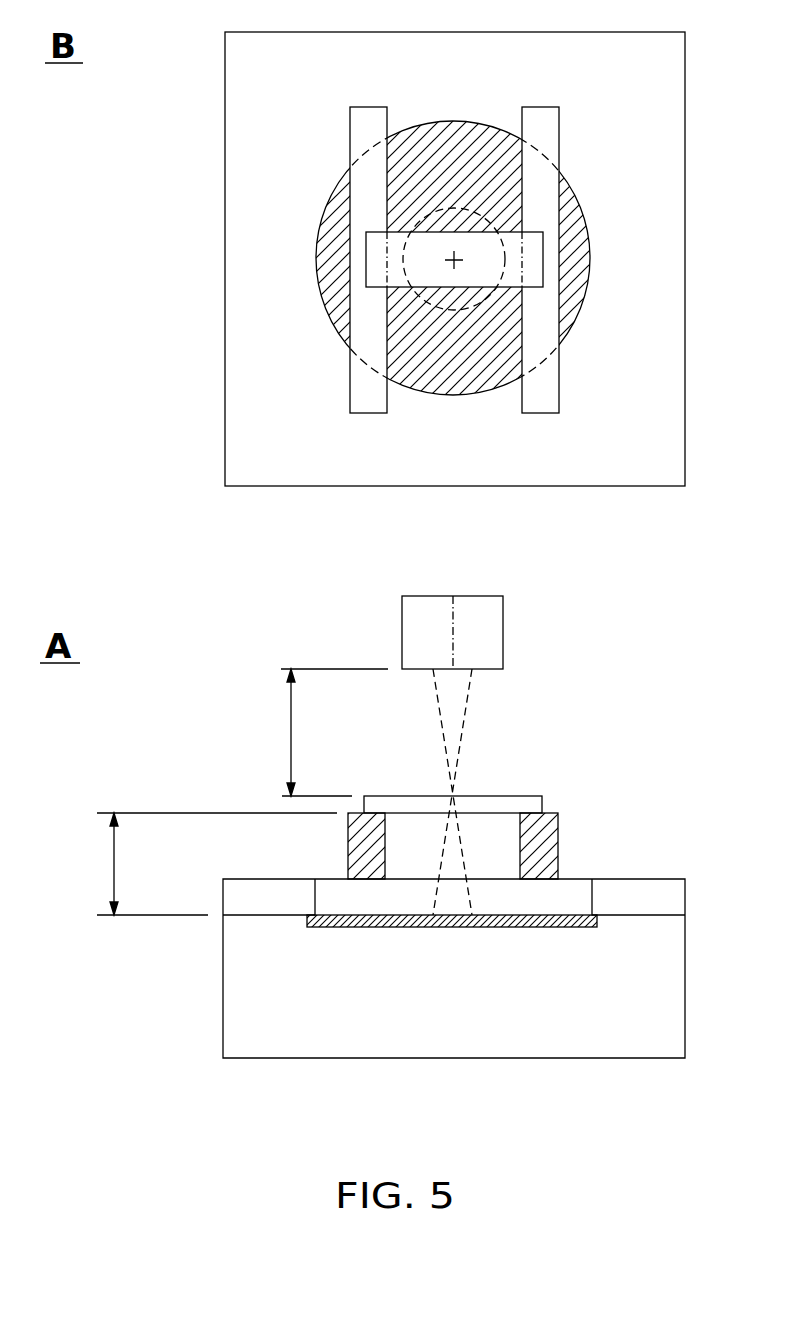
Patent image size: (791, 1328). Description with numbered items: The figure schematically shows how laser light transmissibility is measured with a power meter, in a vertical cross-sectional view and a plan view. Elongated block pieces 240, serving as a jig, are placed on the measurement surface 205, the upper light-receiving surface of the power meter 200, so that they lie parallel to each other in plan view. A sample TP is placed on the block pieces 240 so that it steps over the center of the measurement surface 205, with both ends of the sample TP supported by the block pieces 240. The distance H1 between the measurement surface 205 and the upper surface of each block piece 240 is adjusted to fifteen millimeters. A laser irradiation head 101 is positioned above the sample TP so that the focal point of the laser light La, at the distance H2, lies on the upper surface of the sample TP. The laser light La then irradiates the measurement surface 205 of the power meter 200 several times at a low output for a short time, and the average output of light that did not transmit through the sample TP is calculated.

The laser irradiation head 101 is at (443, 200).
The power meter 200 is at (216, 178).
The measurement surface 205 is at (461, 326).
The block pieces 240 is at (353, 397).
The sample TP is at (543, 265).
The laser light La is at (466, 715).
The distance between measurement surface and upper surface of block piece H1 is at (207, 864).
The focal point distance H2 is at (317, 732).